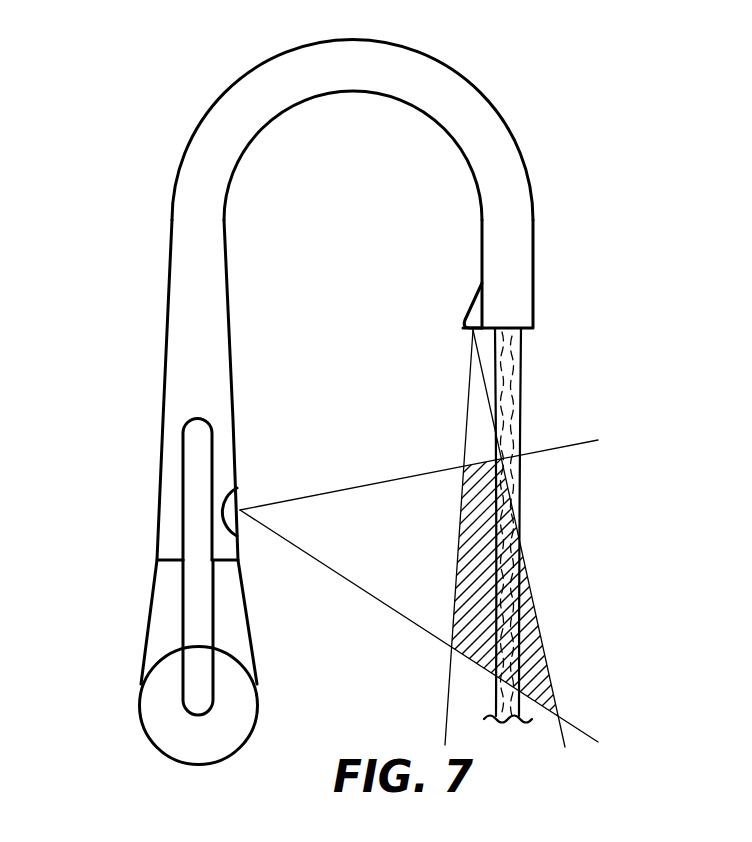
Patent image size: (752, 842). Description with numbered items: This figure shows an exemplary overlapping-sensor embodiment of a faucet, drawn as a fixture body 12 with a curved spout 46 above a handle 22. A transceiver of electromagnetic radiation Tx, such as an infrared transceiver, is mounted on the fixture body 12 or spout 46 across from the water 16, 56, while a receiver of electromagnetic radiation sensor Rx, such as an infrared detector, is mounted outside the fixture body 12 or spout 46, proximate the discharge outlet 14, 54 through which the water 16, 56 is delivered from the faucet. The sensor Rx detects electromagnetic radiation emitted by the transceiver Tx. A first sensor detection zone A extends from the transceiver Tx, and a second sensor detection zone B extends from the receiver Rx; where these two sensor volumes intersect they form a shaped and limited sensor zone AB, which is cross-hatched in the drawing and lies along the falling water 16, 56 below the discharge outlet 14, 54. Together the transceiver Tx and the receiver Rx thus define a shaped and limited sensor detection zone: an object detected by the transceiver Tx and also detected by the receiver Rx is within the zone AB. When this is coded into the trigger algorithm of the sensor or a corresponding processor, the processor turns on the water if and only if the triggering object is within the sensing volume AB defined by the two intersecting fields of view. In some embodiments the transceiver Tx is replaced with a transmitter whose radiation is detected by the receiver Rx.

The fixture body 12 is at (240, 100).
The spout 46 is at (497, 137).
The receiver of electromagnetic radiation sensor Rx is at (466, 318).
The transceiver of electromagnetic radiation Tx is at (233, 508).
The handle 22 is at (170, 527).
The discharge outlet 14 is at (508, 525).
The discharge outlet 54 is at (508, 525).
The water 16 is at (508, 525).
The water 56 is at (493, 336).
The first sensor detection zone A is at (388, 480).
The second sensor detection zone B is at (447, 697).
The shaped and limited sensor zone AB is at (532, 648).